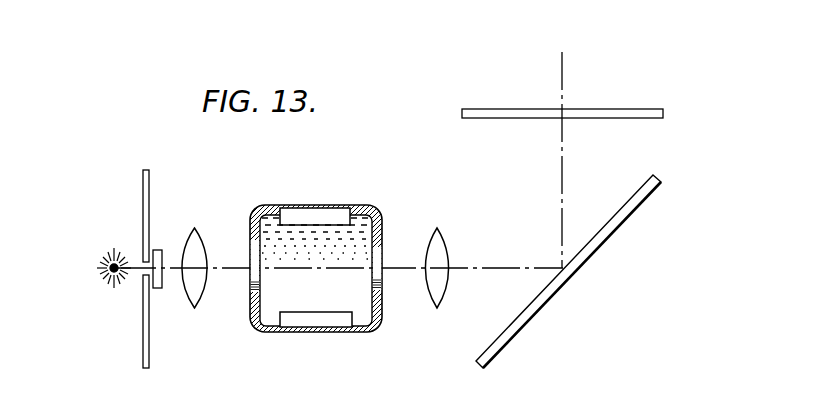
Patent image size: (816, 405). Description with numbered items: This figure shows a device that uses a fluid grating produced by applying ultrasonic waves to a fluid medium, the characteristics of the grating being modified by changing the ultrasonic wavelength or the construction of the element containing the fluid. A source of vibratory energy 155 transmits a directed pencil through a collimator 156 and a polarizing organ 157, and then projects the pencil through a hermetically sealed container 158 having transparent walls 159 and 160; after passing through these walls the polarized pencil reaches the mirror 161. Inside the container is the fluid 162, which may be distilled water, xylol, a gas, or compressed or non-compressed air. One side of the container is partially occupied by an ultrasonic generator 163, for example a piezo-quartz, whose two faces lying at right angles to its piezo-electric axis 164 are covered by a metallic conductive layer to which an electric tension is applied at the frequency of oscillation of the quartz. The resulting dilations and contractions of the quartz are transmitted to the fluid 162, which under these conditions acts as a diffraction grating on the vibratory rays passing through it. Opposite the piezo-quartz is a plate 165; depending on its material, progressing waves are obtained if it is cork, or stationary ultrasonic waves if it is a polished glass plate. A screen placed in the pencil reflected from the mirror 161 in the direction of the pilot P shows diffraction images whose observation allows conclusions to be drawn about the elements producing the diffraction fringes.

The source of vibratory energy 155 is at (107, 261).
The collimator 156 is at (188, 243).
The polarizing organ 157 is at (159, 289).
The hermetically sealed container 158 is at (264, 331).
The transparent wall 159 is at (250, 295).
The transparent wall 160 is at (383, 243).
The mirror 161 is at (629, 217).
The fluid 162 is at (312, 296).
The ultrasonic generator 163 is at (339, 209).
The piezo-electric axis 164 is at (312, 250).
The plate 165 is at (343, 328).
The pilot P is at (562, 144).